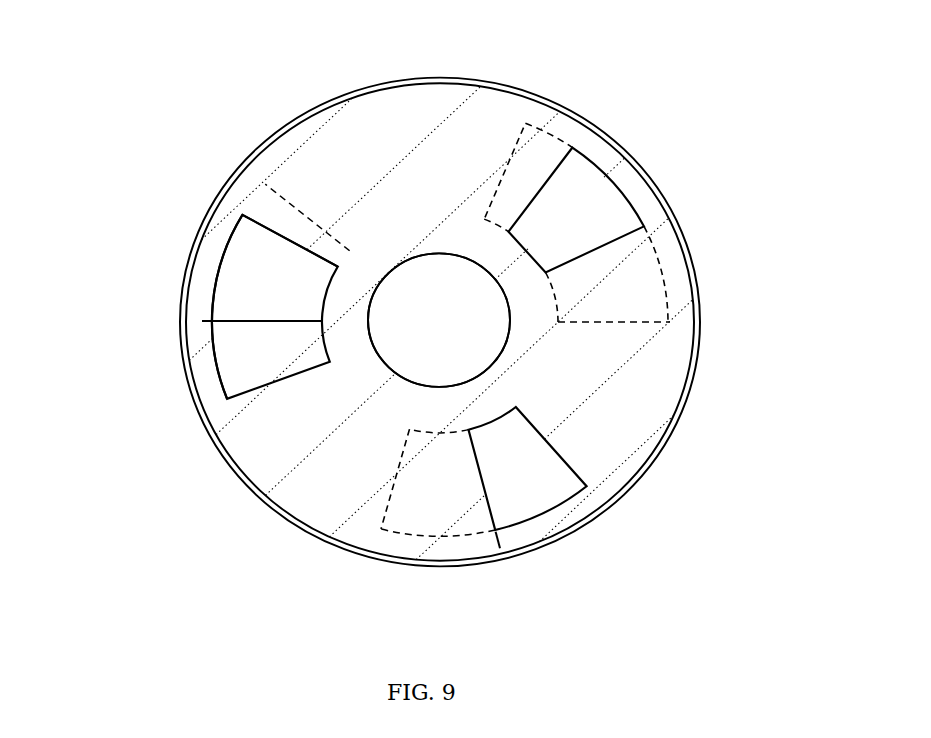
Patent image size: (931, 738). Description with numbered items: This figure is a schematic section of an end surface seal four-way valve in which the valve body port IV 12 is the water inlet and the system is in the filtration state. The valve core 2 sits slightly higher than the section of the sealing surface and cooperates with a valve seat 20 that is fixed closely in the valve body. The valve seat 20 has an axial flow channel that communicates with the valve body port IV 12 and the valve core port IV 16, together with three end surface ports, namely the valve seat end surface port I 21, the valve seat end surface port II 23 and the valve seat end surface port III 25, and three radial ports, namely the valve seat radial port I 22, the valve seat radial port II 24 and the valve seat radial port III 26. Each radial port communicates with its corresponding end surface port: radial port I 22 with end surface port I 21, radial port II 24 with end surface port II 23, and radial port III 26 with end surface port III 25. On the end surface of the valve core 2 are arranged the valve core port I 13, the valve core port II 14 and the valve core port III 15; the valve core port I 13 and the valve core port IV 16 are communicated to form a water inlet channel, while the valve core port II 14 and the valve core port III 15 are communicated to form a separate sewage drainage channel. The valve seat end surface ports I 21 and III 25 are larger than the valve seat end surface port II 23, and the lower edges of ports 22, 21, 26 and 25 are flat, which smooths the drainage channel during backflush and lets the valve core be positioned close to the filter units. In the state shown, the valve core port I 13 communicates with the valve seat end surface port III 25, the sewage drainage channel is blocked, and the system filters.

The valve core 2 is at (540, 386).
The valve body port IV 12 is at (482, 321).
The valve core port IV 16 is at (585, 319).
The valve core port I 13 is at (240, 305).
The valve core port II 14 is at (577, 208).
The valve core port III 15 is at (540, 468).
The valve seat 20 is at (560, 112).
The valve seat end surface port I 21 is at (617, 277).
The valve seat radial port I 22 is at (653, 225).
The valve seat end surface port II 23 is at (425, 515).
The valve seat radial port II 24 is at (408, 548).
The valve seat end surface port III 25 is at (277, 257).
The valve seat radial port III 26 is at (237, 257).